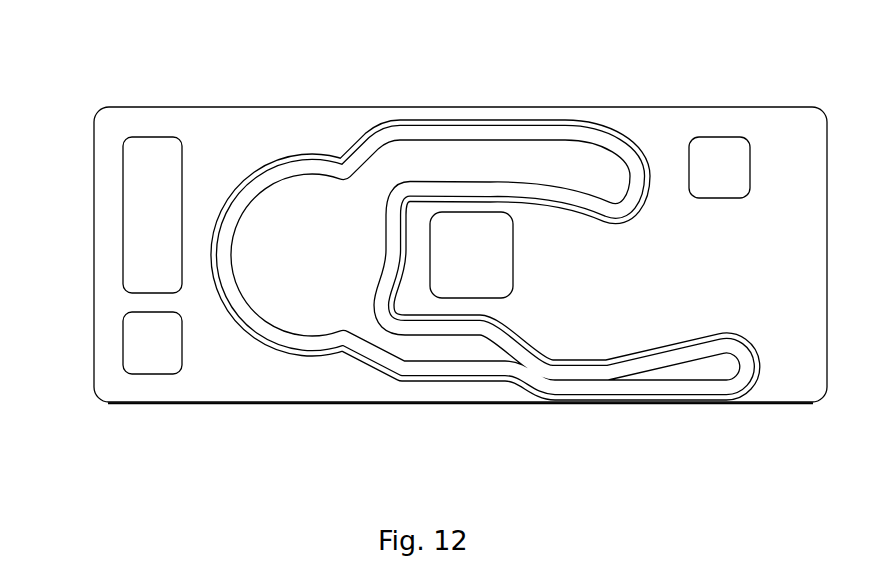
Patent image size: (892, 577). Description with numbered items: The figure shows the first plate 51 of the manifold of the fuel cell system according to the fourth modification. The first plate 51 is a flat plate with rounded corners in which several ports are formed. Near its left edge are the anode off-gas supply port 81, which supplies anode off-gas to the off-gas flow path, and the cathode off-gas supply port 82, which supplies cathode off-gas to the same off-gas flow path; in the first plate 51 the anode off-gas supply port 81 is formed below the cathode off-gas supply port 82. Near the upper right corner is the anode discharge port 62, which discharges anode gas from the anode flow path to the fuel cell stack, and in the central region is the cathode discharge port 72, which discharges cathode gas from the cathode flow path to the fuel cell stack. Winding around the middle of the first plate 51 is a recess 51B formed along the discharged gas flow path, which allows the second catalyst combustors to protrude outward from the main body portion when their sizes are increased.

The first plate 51 is at (260, 108).
The recess 51B is at (300, 308).
The cathode discharge port 72 is at (483, 298).
The anode off-gas supply port 81 is at (124, 192).
The cathode off-gas supply port 82 is at (124, 333).
The anode discharge port 62 is at (732, 138).